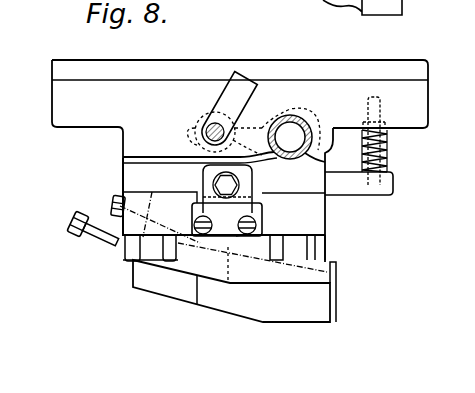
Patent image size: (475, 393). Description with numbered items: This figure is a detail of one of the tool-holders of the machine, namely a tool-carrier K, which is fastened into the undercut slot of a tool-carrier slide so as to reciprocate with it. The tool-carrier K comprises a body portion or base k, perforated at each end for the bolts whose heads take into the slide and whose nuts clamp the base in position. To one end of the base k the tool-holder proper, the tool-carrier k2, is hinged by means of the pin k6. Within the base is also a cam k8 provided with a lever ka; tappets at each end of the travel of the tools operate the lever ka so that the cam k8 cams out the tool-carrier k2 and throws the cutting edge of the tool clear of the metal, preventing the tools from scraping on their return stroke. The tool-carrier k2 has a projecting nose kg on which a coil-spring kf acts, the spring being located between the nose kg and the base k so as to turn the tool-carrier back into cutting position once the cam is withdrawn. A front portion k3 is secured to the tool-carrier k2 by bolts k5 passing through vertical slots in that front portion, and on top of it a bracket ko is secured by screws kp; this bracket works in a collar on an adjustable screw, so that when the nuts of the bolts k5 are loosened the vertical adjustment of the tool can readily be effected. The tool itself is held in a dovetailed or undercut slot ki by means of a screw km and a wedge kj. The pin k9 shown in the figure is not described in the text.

The tool-carrier K is at (240, 98).
The body portion or base k is at (234, 177).
The cam k8 is at (212, 124).
The lever ka is at (244, 92).
The pin k6 is at (298, 116).
The projecting nose kg is at (205, 182).
The dovetailed or undercut slot ki is at (190, 192).
The bracket ko is at (265, 208).
The front portion k3 is at (315, 222).
The bolts k5 is at (300, 250).
The screws kp is at (240, 236).
The wedge kj is at (116, 203).
The screw km is at (100, 239).
The pin k9 is at (394, 184).
The coil-spring kf is at (386, 146).
The tool-carrier k2 is at (314, 186).